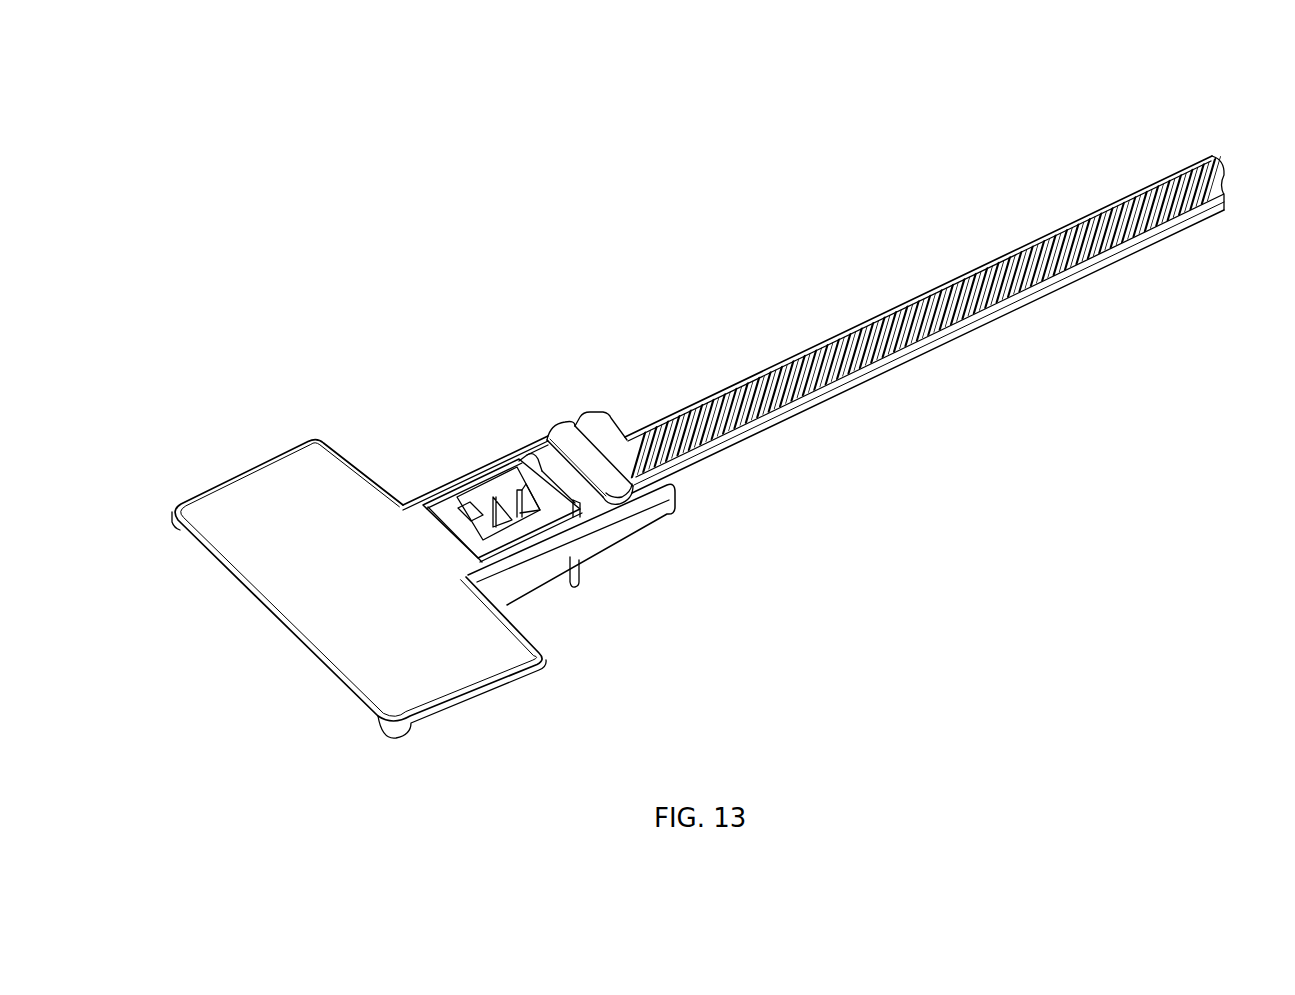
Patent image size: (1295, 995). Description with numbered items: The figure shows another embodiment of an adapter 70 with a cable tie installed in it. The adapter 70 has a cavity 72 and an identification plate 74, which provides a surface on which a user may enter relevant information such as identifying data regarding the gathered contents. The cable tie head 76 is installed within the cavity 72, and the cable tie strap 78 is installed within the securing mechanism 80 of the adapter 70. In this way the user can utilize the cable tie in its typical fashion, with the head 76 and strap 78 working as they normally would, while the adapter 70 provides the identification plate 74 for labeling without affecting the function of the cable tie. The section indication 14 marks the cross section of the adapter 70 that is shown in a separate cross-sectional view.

The section line 14- 14 is at (262, 619).
The adapter 70 is at (314, 300).
The cavity 72 is at (452, 486).
The identification plate 74 is at (360, 683).
The cable tie head 76 is at (567, 580).
The strap 78 is at (977, 328).
The securing mechanism 80 is at (568, 437).